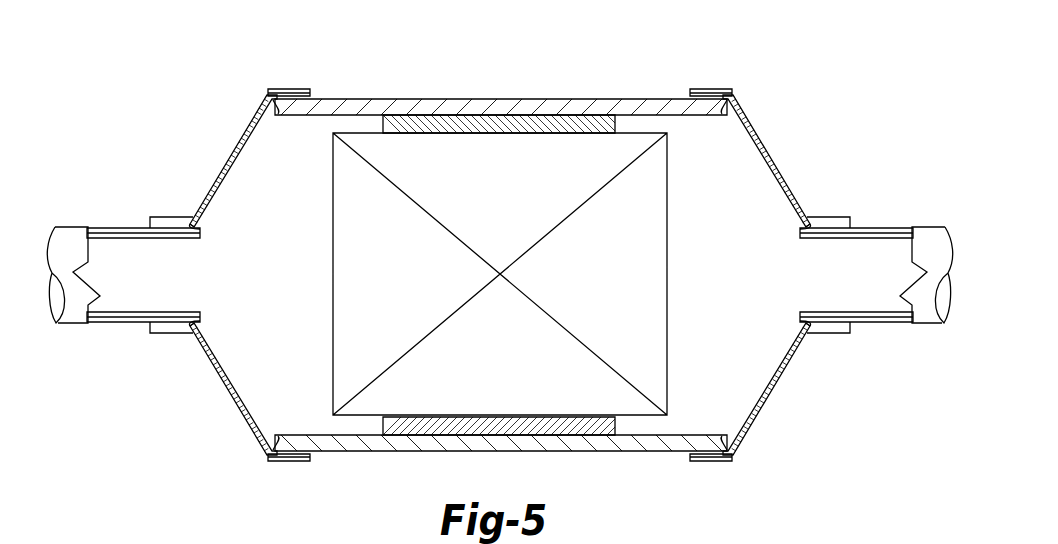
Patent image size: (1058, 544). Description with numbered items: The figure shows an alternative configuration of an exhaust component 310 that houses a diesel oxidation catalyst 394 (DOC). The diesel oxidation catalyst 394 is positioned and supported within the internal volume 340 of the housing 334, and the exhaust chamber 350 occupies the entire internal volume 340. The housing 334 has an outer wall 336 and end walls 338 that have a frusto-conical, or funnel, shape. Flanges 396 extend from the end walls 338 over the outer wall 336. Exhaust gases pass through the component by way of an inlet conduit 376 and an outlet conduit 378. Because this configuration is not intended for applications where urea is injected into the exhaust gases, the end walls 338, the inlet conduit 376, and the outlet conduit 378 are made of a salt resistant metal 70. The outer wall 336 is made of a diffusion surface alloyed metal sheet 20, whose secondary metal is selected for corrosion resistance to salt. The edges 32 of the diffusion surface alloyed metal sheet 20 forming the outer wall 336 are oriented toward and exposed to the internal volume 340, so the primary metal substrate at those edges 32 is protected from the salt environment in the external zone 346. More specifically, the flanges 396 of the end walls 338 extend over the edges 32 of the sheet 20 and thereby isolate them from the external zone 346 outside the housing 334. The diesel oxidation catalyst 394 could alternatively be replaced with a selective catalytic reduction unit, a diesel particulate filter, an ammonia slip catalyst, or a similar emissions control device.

The diffusion surface alloyed metal sheet 20 is at (600, 98).
The edges 32 is at (264, 116).
The salt resistant metal 70 is at (104, 227).
The exhaust component 310 is at (502, 267).
The housing 334 is at (509, 145).
The outer wall 336 is at (420, 97).
The end walls 338 is at (229, 141).
The internal volume 340 is at (240, 362).
The external zone 346 is at (645, 28).
The exhaust chamber 350 is at (240, 282).
The inlet conduit 376 is at (66, 233).
The outlet conduit 378 is at (933, 233).
The diesel oxidation catalyst 394 is at (488, 369).
The flanges 396 is at (289, 88).